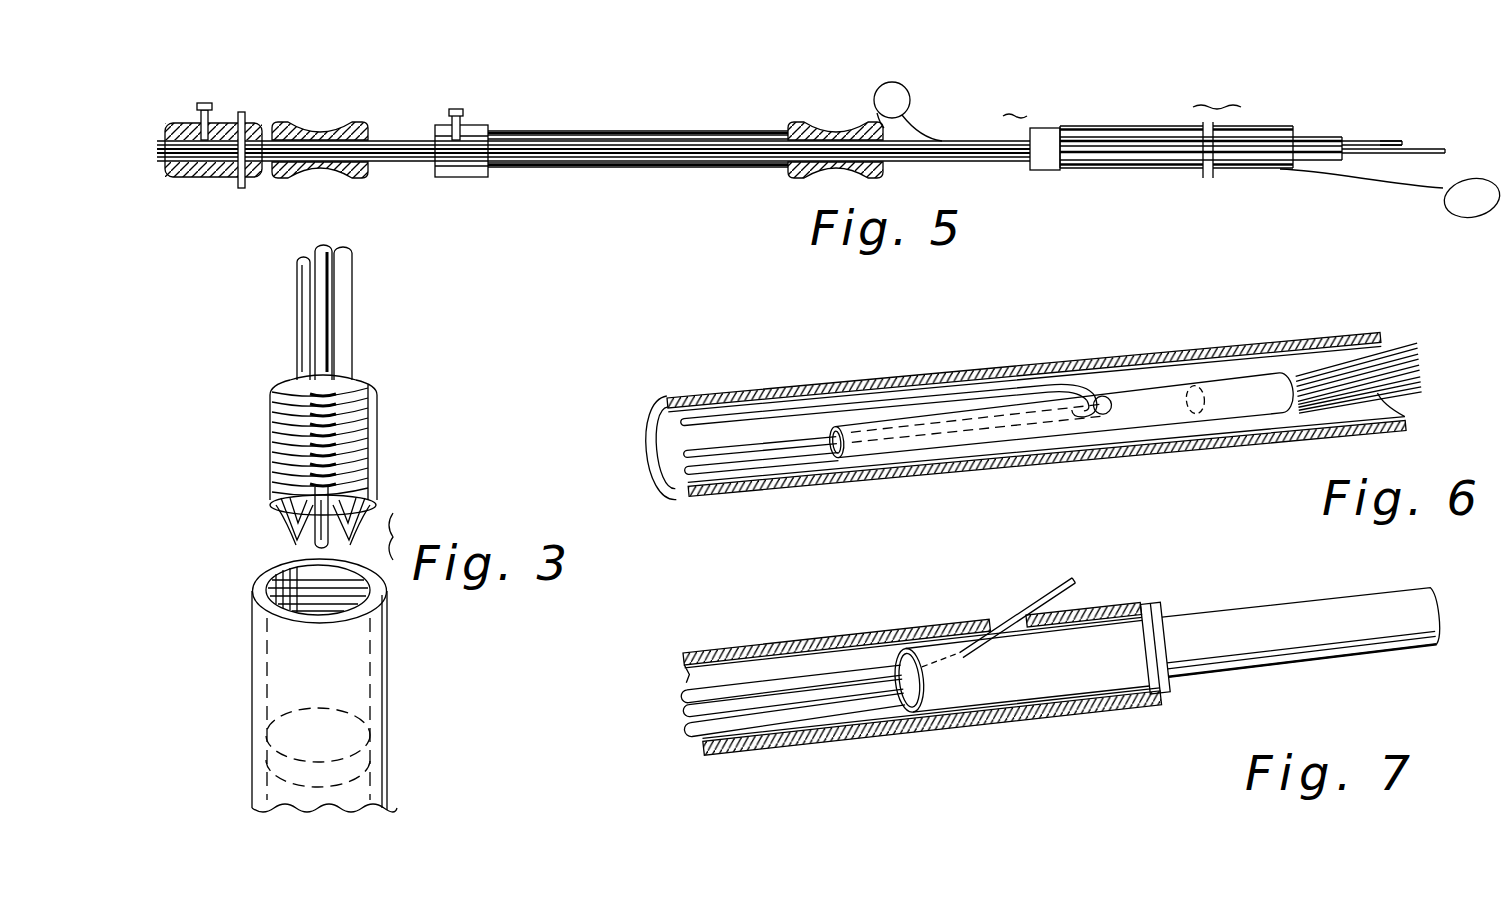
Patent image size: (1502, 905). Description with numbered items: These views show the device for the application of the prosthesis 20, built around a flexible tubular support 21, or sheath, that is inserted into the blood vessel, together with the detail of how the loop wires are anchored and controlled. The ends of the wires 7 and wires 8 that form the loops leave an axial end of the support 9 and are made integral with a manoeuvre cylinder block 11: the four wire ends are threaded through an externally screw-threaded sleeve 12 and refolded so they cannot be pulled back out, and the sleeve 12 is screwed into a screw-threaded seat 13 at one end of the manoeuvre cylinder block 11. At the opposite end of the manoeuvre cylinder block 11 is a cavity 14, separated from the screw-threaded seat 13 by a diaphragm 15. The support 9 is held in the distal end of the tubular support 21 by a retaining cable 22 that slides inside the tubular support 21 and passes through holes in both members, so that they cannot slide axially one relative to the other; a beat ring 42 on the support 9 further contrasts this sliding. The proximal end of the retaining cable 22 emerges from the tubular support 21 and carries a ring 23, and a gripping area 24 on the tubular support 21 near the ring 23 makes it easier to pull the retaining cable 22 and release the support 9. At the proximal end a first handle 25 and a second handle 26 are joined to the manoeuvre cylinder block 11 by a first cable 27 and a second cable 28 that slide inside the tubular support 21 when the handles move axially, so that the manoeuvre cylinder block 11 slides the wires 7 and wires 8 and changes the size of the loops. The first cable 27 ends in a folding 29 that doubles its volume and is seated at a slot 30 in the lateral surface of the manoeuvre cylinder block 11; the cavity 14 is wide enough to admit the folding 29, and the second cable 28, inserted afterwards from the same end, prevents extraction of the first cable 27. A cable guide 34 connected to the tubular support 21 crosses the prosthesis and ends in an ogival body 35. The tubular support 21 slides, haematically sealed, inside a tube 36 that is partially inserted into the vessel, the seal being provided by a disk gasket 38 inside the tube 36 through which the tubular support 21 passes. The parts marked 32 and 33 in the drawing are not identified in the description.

In FIG. 3, the wire 7 is at (324, 284).
In FIG. 6, the wire 7 is at (1418, 358).
In FIG. 7, the wire 7 is at (854, 700).
In FIG. 3, the wire 8 is at (303, 292).
In FIG. 6, the wire 8 is at (1422, 392).
In FIG. 7, the wire 8 is at (791, 722).
In FIG. 7, the support 9 is at (1188, 658).
In FIG. 3, the manoeuvre cylinder block 11 is at (413, 722).
In FIG. 6, the manoeuvre cylinder block 11 is at (1250, 434).
In FIG. 3, the sleeve 12 is at (357, 437).
In FIG. 3, the screw-threaded seat 13 is at (350, 588).
In FIG. 3, the cavity 14 is at (357, 797).
In FIG. 3, the diaphragm 15 is at (365, 757).
In FIG. 6, the diaphragm 15 is at (1195, 420).
In FIG. 5, the device for the application of the prosthesis 20 is at (1022, 86).
In FIG. 5, the tubular support 21 is at (1107, 160).
In FIG. 6, the tubular support 21 is at (892, 378).
In FIG. 7, the tubular support 21 is at (804, 641).
In FIG. 5, the retaining cable 22 is at (1412, 138).
In FIG. 7, the retaining cable 22 is at (1051, 594).
In FIG. 5, the ring 23 is at (896, 83).
In FIG. 5, the gripping area 24 is at (840, 128).
In FIG. 5, the first handle 25 is at (352, 120).
In FIG. 5, the second handle 26 is at (229, 126).
In FIG. 5, the first cable 27 is at (1418, 141).
In FIG. 6, the first cable 27 is at (778, 434).
In FIG. 5, the second cable 28 is at (1408, 152).
In FIG. 6, the second cable 28 is at (778, 458).
In FIG. 6, the folding 29 is at (1062, 385).
In FIG. 6, the slot 30 is at (1100, 397).
In FIG. 5, the screw 32 is at (205, 104).
In FIG. 5, the clamp block 33 is at (456, 116).
In FIG. 5, the cable guide 34 is at (1390, 180).
In FIG. 5, the ogival body 35 is at (1470, 203).
In FIG. 5, the tube 36 is at (1157, 124).
In FIG. 5, the disk gasket 38 is at (1042, 129).
In FIG. 7, the beat ring 42 is at (1162, 603).